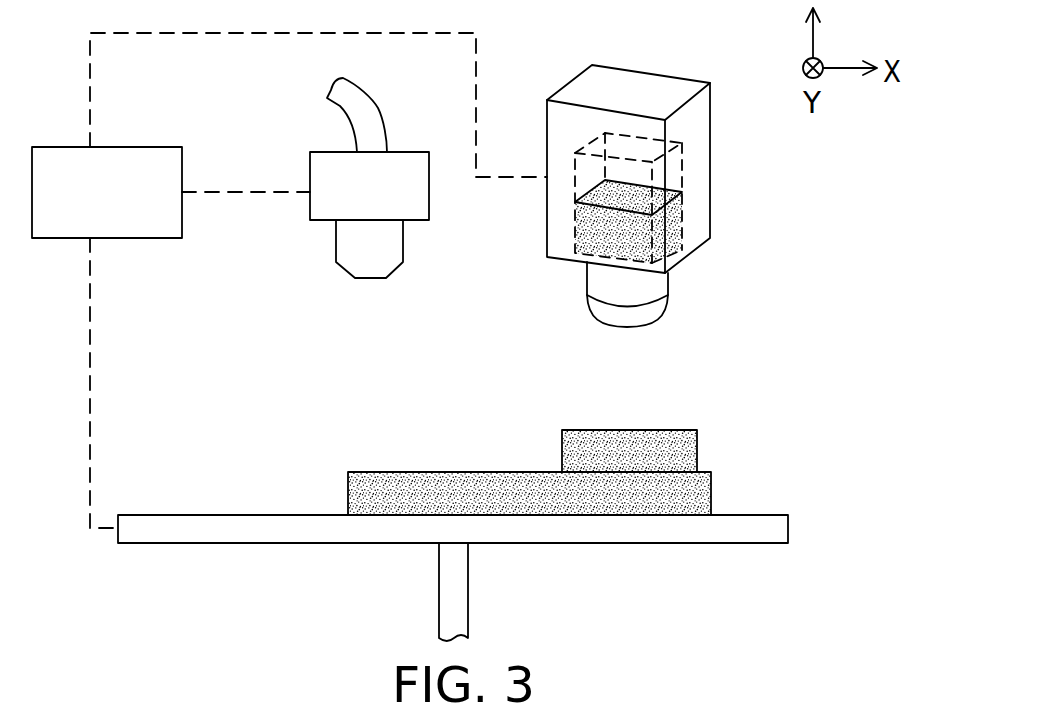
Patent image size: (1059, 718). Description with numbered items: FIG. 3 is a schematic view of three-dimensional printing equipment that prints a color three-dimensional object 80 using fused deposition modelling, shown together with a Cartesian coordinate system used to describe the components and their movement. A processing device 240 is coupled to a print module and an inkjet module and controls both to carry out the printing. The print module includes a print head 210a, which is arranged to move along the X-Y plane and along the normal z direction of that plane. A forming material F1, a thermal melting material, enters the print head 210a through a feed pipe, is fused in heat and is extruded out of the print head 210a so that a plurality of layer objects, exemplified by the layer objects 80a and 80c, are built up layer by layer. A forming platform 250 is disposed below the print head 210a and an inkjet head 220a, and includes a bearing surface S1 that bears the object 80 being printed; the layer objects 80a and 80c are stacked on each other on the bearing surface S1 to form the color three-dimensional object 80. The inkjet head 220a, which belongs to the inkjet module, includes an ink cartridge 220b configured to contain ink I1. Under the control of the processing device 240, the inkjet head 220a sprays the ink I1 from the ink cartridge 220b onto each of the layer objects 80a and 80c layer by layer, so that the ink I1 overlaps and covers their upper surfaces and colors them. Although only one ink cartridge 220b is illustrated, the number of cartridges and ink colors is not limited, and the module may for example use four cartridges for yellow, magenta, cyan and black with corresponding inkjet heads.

The processing device 240 is at (105, 147).
The print head 210a is at (389, 258).
The forming material F1 is at (365, 110).
The inkjet head 220a is at (655, 292).
The ink cartridge 220b is at (681, 170).
The ink I1 is at (682, 227).
The color three-dimensional object 80 is at (595, 432).
The layer object 80a is at (705, 495).
The layer object 80c is at (690, 450).
The forming platform 250 is at (718, 533).
The bearing surface S1 is at (783, 504).